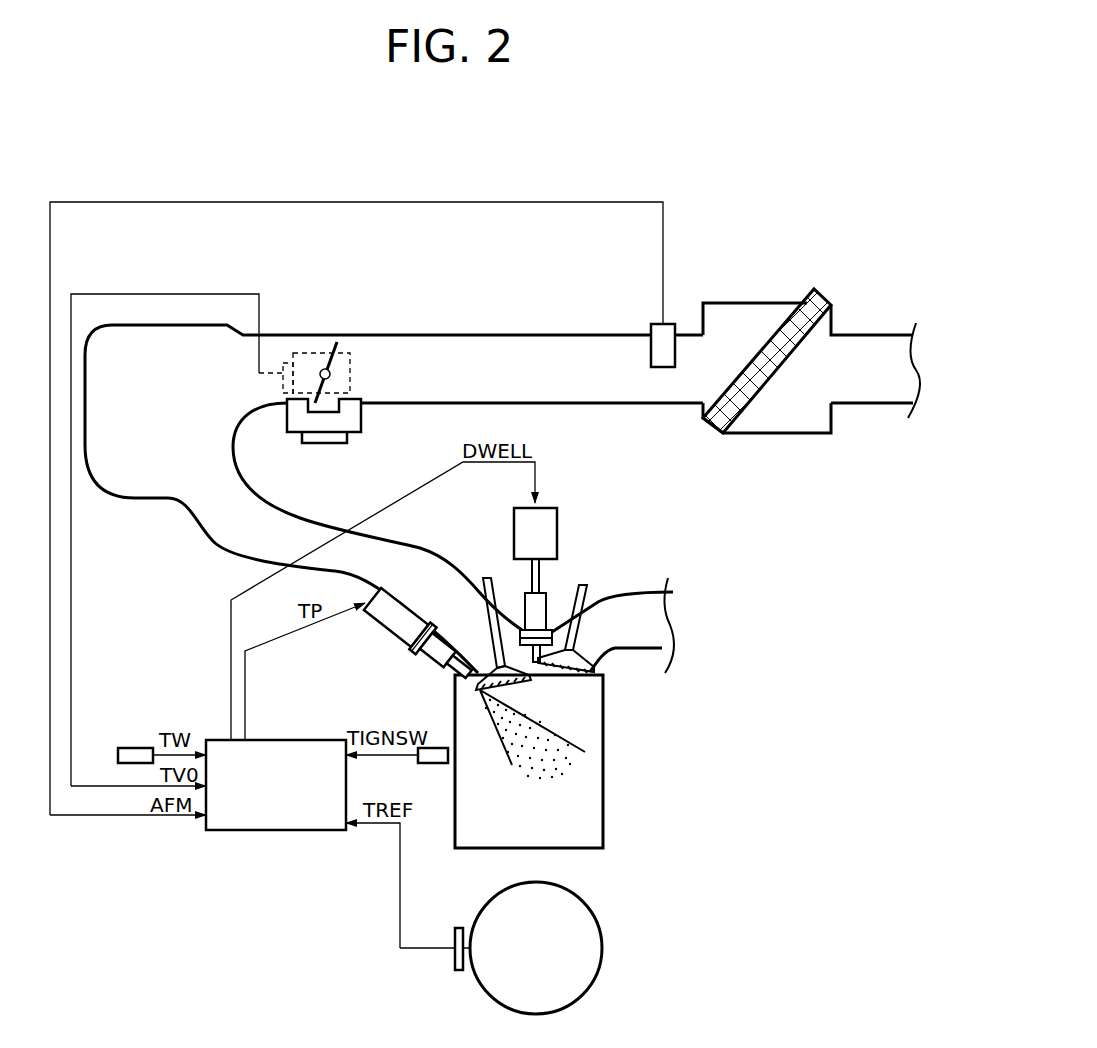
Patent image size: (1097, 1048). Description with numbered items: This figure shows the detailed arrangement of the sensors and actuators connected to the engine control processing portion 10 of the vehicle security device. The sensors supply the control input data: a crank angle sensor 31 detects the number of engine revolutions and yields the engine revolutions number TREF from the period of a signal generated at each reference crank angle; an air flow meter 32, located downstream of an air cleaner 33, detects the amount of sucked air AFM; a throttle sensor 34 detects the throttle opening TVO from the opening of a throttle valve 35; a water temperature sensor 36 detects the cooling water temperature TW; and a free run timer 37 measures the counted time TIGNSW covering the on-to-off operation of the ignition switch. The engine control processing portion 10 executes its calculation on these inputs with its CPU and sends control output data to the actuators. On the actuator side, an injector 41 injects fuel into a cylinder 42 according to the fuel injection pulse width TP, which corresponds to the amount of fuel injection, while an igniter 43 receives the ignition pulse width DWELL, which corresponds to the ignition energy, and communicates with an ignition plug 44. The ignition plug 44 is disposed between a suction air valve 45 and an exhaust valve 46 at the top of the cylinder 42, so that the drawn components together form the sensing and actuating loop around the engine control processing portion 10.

The engine control processing portion 10 is at (287, 832).
The crank angle sensor 31 is at (458, 972).
The air flow meter 32 is at (652, 324).
The air cleaner 33 is at (779, 330).
The throttle sensor 34 is at (309, 353).
The throttle valve 35 is at (322, 395).
The water temperature sensor 36 is at (133, 748).
The free run timer 37 is at (436, 765).
The injector 41 is at (392, 634).
The cylinder 42 is at (455, 693).
The igniter 43 is at (557, 506).
The ignition plug 44 is at (548, 632).
The suction air valve 45 is at (482, 607).
The exhaust valve 46 is at (593, 597).